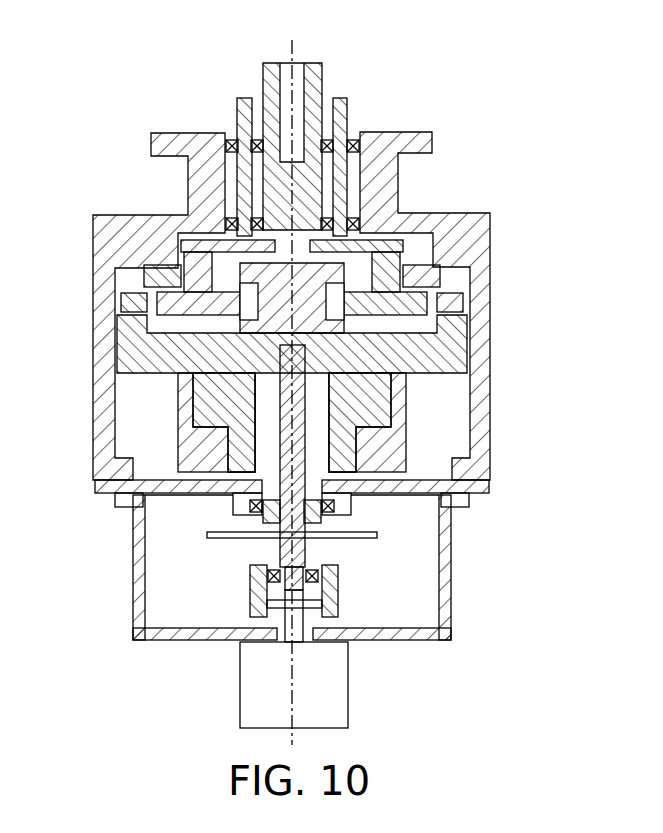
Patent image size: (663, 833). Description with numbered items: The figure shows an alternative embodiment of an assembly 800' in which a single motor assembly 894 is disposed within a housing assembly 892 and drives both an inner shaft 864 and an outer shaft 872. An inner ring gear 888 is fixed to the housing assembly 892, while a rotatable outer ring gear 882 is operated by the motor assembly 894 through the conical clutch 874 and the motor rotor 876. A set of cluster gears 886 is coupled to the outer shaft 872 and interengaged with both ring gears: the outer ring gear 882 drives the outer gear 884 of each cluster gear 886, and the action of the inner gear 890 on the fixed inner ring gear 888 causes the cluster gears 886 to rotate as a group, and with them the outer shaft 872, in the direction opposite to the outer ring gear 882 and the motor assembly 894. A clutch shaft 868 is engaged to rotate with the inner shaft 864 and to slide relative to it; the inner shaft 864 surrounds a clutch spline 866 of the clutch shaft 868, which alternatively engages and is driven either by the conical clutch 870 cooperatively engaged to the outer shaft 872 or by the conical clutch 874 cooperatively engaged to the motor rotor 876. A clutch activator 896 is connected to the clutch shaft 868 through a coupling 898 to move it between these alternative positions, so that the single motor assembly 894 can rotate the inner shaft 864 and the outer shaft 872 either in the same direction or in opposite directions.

The assembly 800' is at (158, 392).
The inner shaft 864 is at (322, 75).
The clutch spline 866 is at (300, 178).
The clutch shaft 868 is at (430, 213).
The conical clutch 870 is at (398, 208).
The outer shaft 872 is at (348, 105).
The conical clutch 874 is at (489, 484).
The motor rotor 876 is at (135, 365).
The outer ring gear 882 is at (463, 297).
The outer gear 884 is at (440, 283).
The cluster gears 886 is at (423, 315).
The inner ring gear 888 is at (438, 268).
The inner gear 890 is at (405, 242).
The housing assembly 892 is at (122, 215).
The motor assembly 894 is at (452, 520).
The clutch activator 896 is at (240, 680).
The coupling 898 is at (255, 576).